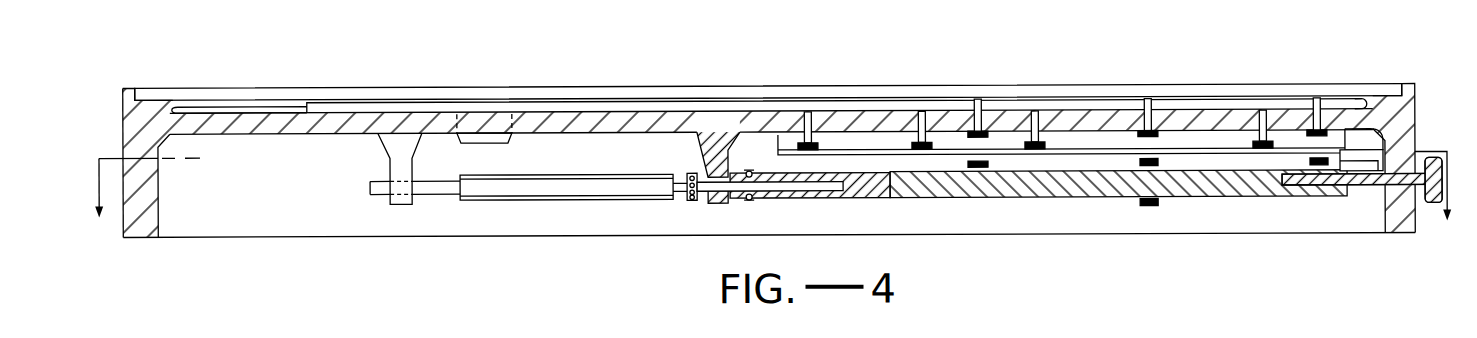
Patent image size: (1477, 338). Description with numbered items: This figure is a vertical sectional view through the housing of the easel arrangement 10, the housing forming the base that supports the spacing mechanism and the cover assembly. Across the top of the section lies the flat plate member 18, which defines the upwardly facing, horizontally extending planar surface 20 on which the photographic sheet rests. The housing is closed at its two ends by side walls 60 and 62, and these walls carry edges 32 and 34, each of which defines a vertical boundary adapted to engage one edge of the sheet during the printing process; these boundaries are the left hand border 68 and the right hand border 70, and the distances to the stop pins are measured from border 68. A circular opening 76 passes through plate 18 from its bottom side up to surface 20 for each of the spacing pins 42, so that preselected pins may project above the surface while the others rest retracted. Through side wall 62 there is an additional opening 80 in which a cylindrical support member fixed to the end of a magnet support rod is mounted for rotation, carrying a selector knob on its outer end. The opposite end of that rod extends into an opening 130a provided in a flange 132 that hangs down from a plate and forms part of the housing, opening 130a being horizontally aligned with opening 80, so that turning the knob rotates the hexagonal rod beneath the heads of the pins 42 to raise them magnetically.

The easel arrangement 10 is at (774, 203).
The flat plate member 18 is at (272, 113).
The planar surface 20 is at (296, 107).
The edge 32 is at (129, 89).
The edge 34 is at (1407, 92).
The spacing pins 42 is at (1040, 78).
The side wall 60 is at (148, 215).
The side wall 62 is at (1397, 229).
The left hand border 68 is at (177, 107).
The right hand border 70 is at (1362, 108).
The circular opening 76 is at (810, 112).
The opening 80 is at (1398, 158).
The opening 130a is at (729, 192).
The flange 132 is at (708, 158).